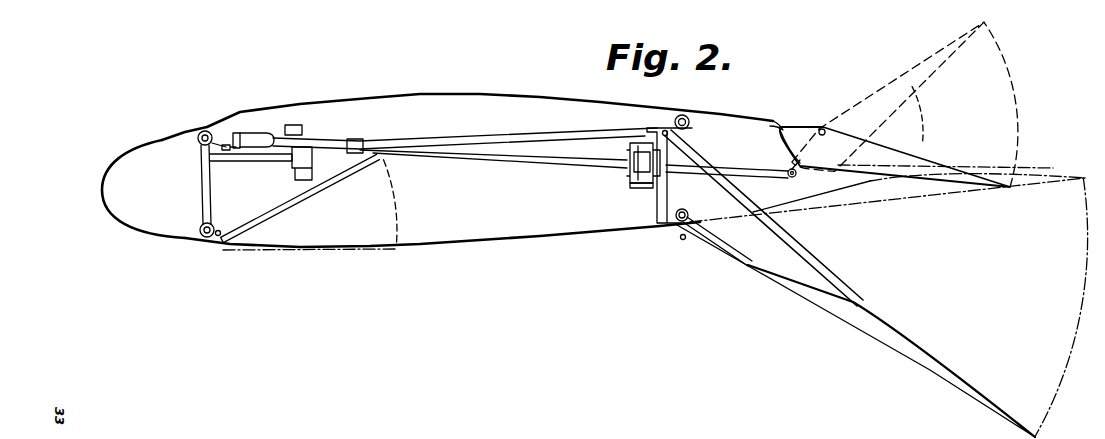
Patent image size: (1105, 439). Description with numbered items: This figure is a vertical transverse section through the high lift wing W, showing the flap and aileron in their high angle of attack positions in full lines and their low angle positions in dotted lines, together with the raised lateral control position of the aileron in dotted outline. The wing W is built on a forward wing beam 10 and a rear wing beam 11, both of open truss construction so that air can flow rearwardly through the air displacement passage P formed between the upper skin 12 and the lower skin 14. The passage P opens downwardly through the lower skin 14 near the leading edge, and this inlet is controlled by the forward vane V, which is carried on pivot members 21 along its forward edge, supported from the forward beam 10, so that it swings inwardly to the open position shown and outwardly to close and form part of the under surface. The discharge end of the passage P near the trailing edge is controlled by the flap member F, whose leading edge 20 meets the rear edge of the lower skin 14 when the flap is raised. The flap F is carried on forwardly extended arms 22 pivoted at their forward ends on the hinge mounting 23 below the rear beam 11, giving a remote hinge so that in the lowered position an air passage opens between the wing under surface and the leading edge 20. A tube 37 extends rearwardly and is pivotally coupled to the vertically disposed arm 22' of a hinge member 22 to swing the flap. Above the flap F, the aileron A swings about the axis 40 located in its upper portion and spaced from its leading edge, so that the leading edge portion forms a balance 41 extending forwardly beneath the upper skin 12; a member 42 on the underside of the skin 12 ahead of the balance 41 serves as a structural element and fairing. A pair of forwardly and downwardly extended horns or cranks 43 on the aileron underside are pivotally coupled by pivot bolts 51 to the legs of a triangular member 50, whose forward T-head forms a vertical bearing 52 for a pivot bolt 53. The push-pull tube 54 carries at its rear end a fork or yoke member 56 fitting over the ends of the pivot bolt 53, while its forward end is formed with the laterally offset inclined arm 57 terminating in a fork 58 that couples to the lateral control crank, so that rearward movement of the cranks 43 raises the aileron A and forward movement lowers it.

The forward wing beam 10 is at (200, 130).
The rear wing beam 11 is at (688, 118).
The upper skin 12 is at (540, 97).
The lower skin 14 is at (478, 247).
The leading edge 20 is at (763, 279).
The pivot members 21 is at (230, 232).
The arms 22 is at (717, 262).
The vertically disposed arm 22' is at (717, 110).
The hinge mounting 23 is at (680, 240).
The tube 37 is at (500, 142).
The axis 40 is at (905, 100).
The balance 41 is at (820, 128).
The member 42 is at (781, 124).
The horns or cranks 43 is at (805, 170).
The triangular member 50 is at (717, 167).
The pivot bolts 51 is at (792, 178).
The vertical bearing 52 is at (633, 183).
The pivot bolt 53 is at (640, 188).
The push-pull tube 54 is at (557, 157).
The fork or yoke member 56 is at (641, 143).
The inclined arm 57 is at (268, 133).
The fork 58 is at (243, 134).
The wing W is at (457, 93).
The air displacement passage P is at (504, 197).
The forward vane V is at (352, 196).
The aileron A is at (913, 147).
The flap member F is at (913, 358).